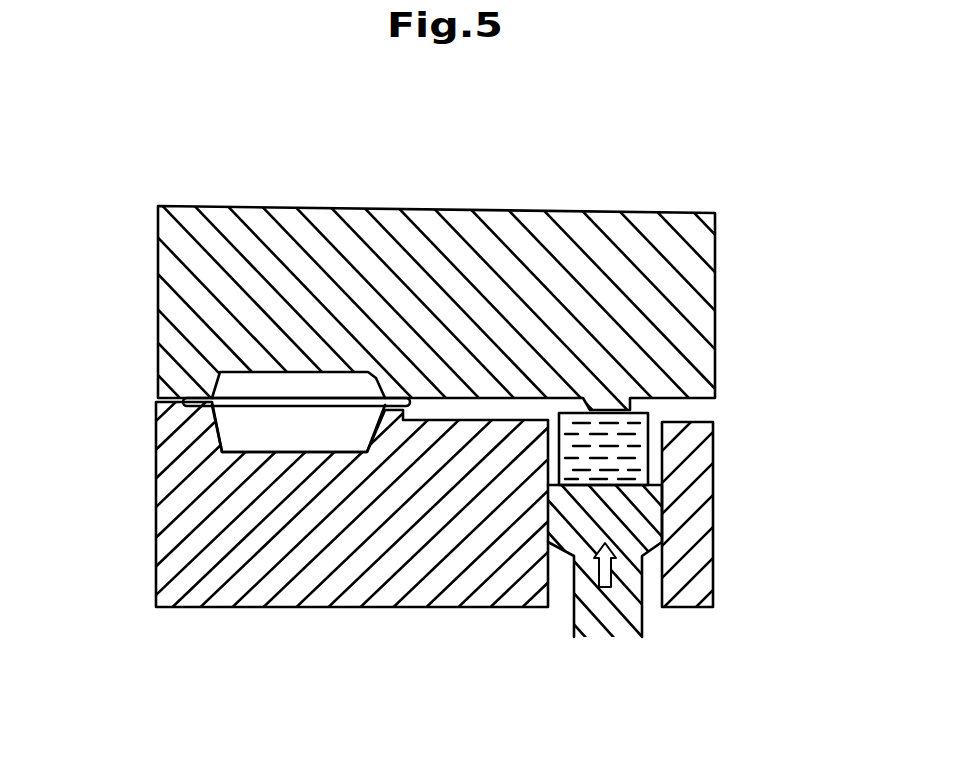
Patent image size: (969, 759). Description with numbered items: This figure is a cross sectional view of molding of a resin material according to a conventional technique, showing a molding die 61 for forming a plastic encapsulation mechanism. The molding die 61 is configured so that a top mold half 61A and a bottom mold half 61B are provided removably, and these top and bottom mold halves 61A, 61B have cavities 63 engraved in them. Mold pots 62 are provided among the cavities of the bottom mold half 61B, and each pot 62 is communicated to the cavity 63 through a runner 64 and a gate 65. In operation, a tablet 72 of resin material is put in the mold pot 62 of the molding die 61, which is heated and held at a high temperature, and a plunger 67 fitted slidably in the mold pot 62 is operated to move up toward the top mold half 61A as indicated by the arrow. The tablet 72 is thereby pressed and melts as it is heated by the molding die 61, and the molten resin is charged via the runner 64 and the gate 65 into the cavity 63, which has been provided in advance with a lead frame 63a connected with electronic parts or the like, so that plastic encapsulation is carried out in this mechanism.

The molding die 61 is at (846, 345).
The top mold half 61A is at (700, 357).
The bottom mold half 61B is at (710, 495).
The mold pot 62 is at (650, 440).
The cavity 63 is at (262, 456).
The lead frame 63a is at (271, 396).
The runner 64 is at (500, 407).
The gate 65 is at (413, 413).
The plunger 67 is at (620, 627).
The tablet 72 is at (548, 463).